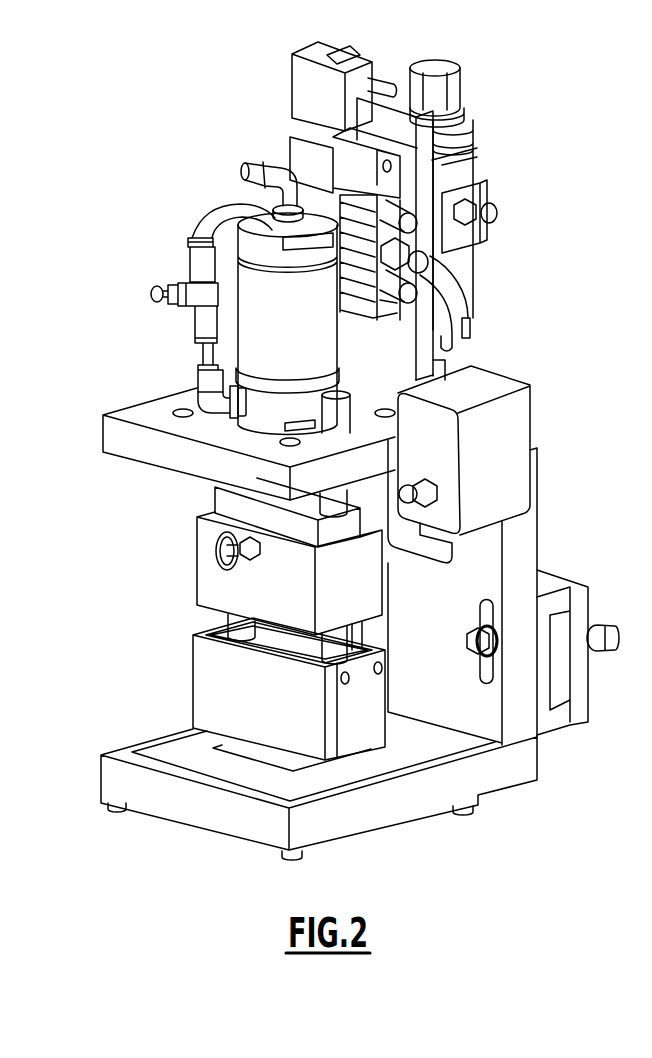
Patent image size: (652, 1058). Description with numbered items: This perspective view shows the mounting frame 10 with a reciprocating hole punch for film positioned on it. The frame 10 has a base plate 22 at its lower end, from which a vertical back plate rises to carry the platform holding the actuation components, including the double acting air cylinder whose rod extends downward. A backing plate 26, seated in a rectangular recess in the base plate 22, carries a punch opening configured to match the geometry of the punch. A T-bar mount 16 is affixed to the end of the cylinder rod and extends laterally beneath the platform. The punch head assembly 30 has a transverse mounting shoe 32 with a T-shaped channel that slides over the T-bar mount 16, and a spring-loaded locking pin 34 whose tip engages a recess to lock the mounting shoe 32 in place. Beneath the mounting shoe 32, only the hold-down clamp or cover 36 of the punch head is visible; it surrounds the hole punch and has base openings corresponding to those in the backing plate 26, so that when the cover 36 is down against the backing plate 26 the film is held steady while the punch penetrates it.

The mounting frame 10 is at (349, 453).
The T-bar mount 16 is at (212, 497).
The base plate 22 is at (192, 807).
The backing plate 26 is at (177, 760).
The punch head assembly 30 is at (237, 612).
The transverse mounting shoe 32 is at (254, 560).
The locking pin 34 is at (296, 605).
The hold-down clamp or cover 36 is at (210, 683).